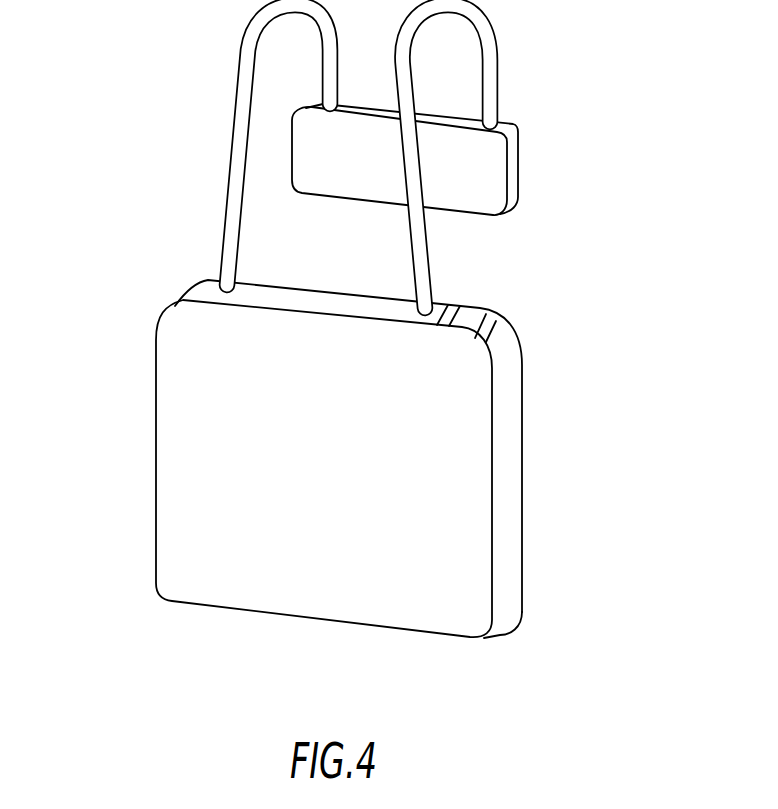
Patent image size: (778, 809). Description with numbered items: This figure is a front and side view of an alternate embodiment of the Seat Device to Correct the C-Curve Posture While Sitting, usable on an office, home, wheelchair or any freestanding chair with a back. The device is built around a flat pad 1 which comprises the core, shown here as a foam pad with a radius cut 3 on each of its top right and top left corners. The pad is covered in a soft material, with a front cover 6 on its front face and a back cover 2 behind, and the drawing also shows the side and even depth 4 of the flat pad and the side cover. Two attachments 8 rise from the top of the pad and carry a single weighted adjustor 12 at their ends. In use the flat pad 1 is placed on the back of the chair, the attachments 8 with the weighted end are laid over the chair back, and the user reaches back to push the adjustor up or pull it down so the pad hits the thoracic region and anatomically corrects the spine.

The flat pad 1 is at (345, 446).
The back cover 2 is at (523, 496).
The radius cut 3 is at (468, 320).
The side and even depth of the flat pad 4 is at (510, 597).
The front cover 6 is at (200, 537).
The two attachments 8 is at (229, 231).
The single weighted adjustor 12 is at (355, 185).